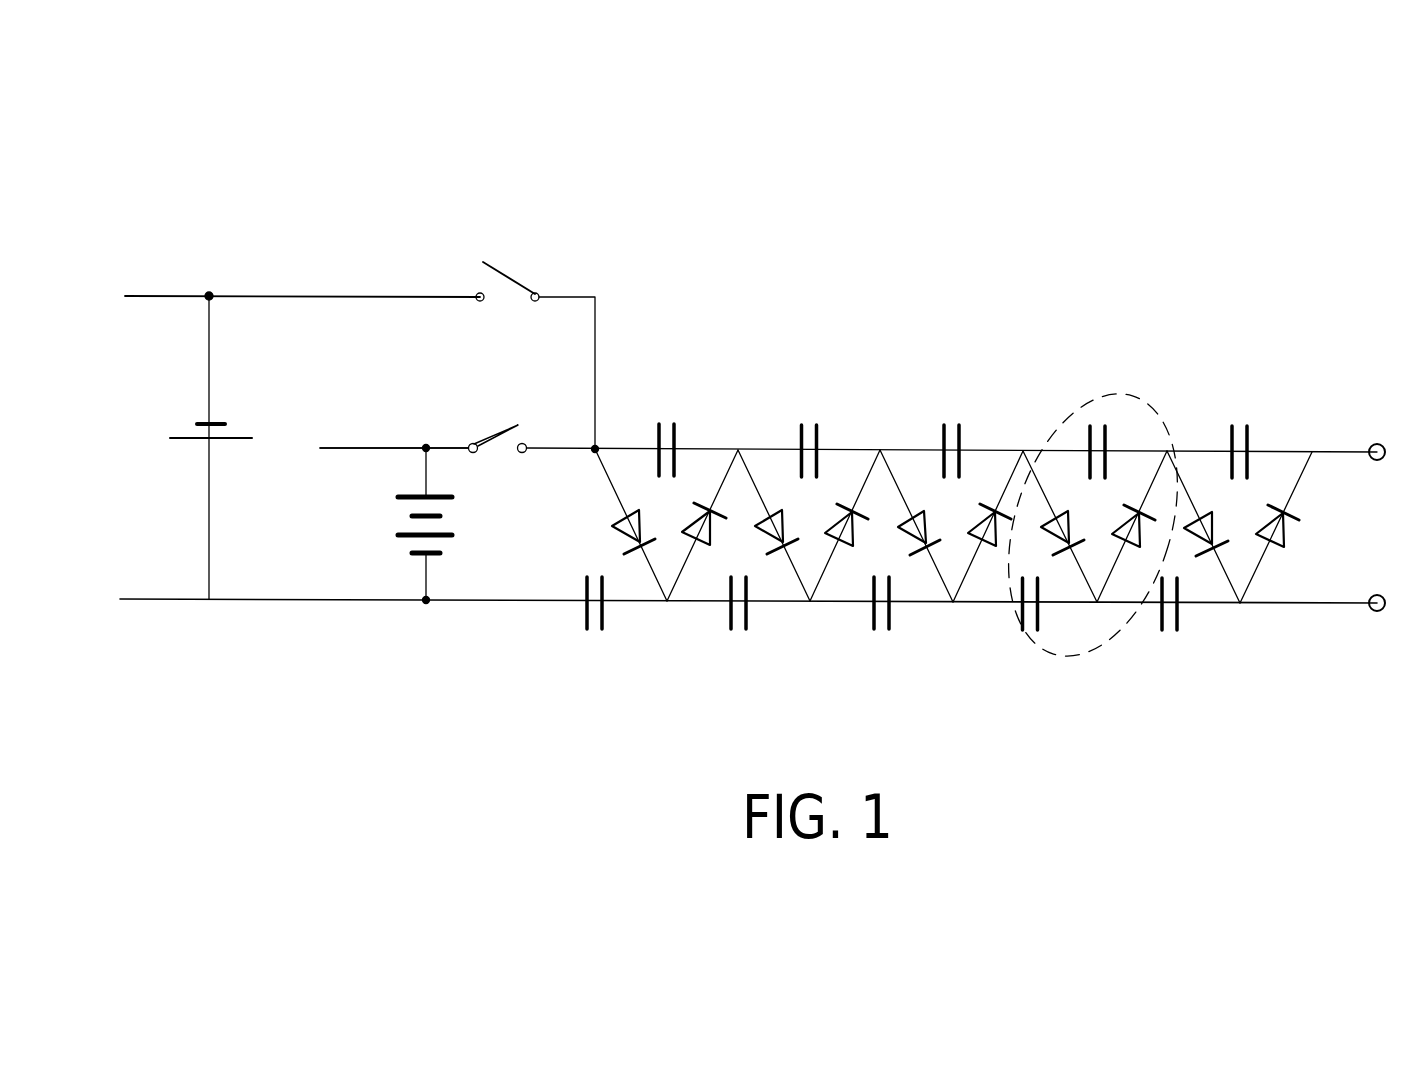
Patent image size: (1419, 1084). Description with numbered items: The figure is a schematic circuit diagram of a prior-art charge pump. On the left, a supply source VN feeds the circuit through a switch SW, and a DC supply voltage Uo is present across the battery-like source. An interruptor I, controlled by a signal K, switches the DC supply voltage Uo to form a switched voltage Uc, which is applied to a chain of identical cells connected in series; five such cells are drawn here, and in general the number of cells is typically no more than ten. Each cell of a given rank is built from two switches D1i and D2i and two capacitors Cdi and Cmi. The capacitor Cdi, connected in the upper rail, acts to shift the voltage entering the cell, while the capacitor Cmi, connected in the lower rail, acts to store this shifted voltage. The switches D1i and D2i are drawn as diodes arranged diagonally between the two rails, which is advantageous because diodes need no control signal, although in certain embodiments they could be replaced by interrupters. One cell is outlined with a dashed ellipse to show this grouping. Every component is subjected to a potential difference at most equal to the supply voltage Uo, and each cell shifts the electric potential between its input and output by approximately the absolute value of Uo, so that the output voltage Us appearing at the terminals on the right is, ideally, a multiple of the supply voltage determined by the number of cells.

The supply voltage source VN is at (152, 597).
The switch SW is at (512, 195).
The control signal K is at (494, 418).
The interruptor I is at (482, 424).
The DC supply voltage Uo is at (320, 487).
The switched voltage Uc is at (553, 487).
The output voltage Us is at (1378, 493).
The shift capacitor Cdi is at (1095, 432).
The first switch D1i is at (1058, 492).
The second switch D2i is at (1143, 492).
The storage capacitor Cmi is at (1030, 618).